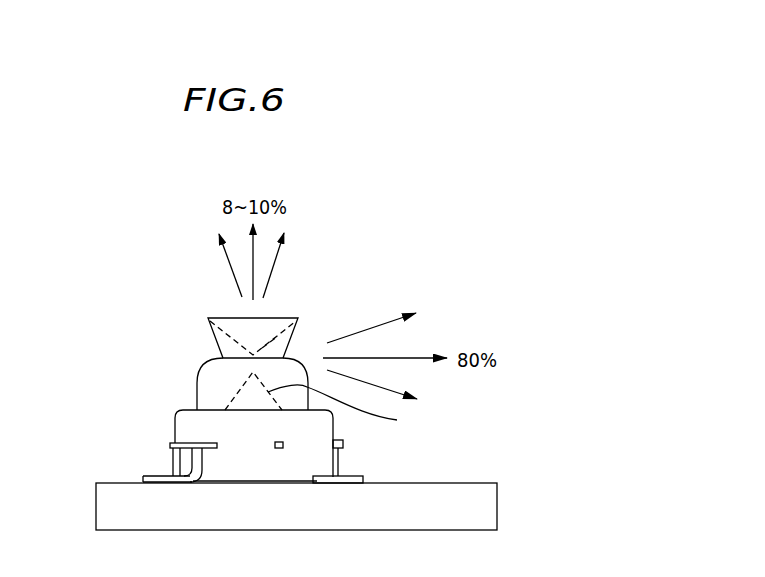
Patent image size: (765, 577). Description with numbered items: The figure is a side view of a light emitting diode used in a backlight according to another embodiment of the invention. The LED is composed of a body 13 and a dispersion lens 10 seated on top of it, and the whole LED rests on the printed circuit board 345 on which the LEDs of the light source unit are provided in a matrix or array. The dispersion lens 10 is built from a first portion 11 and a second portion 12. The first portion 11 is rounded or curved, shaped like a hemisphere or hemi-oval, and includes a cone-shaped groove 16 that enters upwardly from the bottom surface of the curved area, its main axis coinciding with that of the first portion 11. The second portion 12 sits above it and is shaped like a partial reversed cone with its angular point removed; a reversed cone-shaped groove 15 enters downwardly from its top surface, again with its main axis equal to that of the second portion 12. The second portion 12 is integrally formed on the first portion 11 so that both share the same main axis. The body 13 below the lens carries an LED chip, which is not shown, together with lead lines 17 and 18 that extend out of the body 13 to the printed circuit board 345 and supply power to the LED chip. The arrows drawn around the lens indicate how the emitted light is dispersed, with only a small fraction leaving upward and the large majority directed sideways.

The dispersion lens 10 is at (142, 318).
The first portion 11 is at (213, 382).
The second portion 12 is at (213, 332).
The body 13 is at (187, 425).
The reversed cone-shaped groove 15 is at (275, 337).
The cone-shaped groove 16 is at (397, 420).
The lead line 17 is at (163, 476).
The lead line 18 is at (345, 477).
The printed circuit board 345 is at (488, 507).